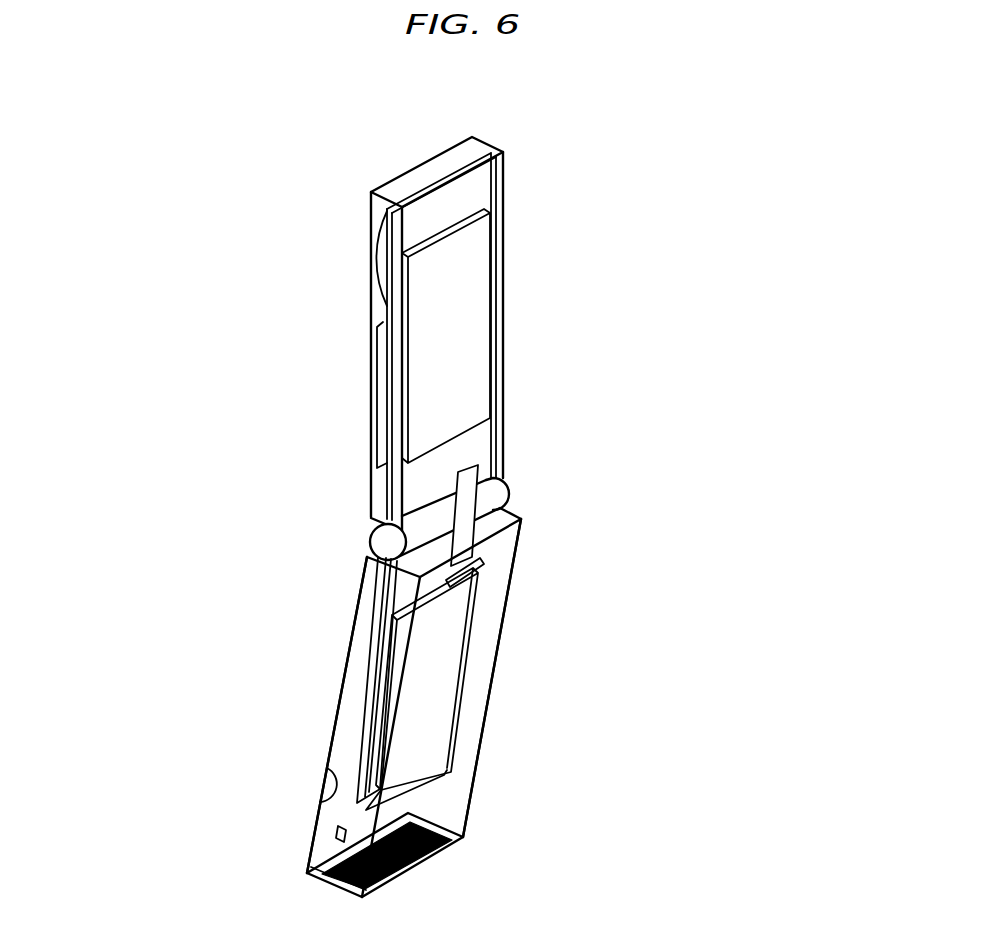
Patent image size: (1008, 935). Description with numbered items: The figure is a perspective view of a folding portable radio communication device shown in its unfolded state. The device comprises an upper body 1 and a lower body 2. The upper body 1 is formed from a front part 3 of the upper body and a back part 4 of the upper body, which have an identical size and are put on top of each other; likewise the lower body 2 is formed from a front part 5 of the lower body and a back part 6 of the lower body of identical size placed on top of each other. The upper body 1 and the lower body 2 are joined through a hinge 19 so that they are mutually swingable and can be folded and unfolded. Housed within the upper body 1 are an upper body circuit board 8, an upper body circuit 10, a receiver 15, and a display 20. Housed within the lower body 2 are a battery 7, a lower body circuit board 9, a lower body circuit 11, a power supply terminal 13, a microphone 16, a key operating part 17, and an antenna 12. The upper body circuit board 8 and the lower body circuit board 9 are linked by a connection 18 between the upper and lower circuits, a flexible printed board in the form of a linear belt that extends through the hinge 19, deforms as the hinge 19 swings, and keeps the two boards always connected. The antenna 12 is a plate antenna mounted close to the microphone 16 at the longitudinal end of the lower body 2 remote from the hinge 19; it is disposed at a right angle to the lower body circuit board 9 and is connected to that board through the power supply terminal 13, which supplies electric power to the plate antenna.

The upper body 1 is at (509, 145).
The lower body 2 is at (478, 843).
The front part of the upper body 3 is at (379, 185).
The back part of the upper body 4 is at (505, 187).
The front part of the lower body 5 is at (335, 733).
The back part of the lower body 6 is at (476, 806).
The battery 7 is at (478, 690).
The upper body circuit board 8 is at (468, 198).
The lower body circuit board 9 is at (484, 554).
The upper body circuit 10 is at (470, 408).
The lower body circuit 11 is at (432, 771).
The antenna 12 is at (422, 848).
The power supply terminal 13 is at (343, 838).
The receiver 15 is at (376, 271).
The microphone 16 is at (324, 786).
The key operating part 17 is at (343, 698).
The connection between the upper and lower circuits 18 is at (482, 497).
The hinge 19 is at (370, 541).
The display 20 is at (376, 388).